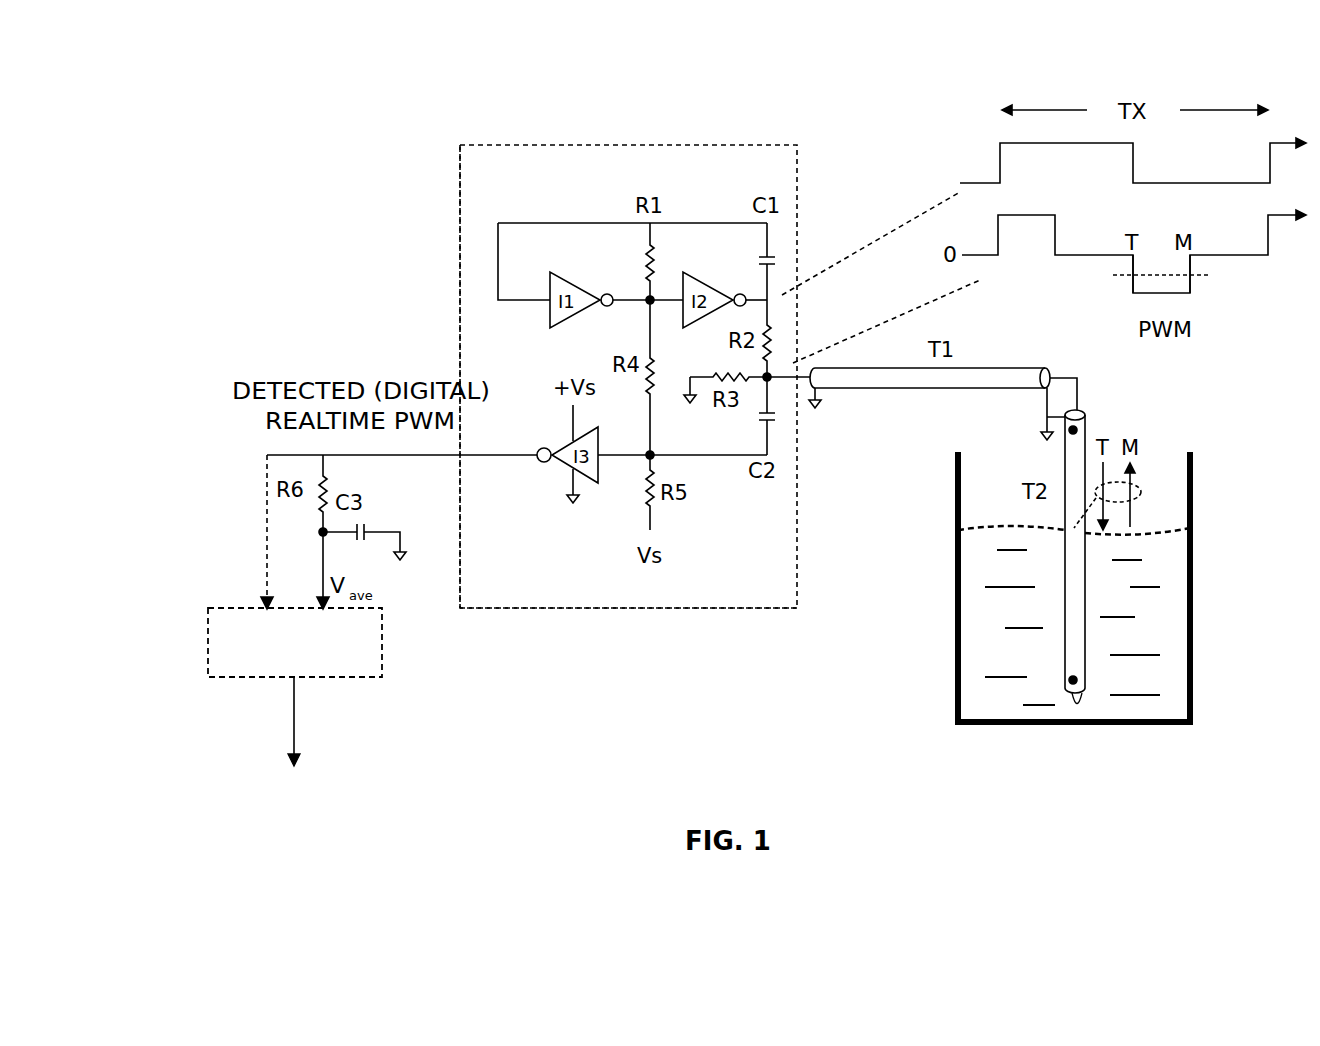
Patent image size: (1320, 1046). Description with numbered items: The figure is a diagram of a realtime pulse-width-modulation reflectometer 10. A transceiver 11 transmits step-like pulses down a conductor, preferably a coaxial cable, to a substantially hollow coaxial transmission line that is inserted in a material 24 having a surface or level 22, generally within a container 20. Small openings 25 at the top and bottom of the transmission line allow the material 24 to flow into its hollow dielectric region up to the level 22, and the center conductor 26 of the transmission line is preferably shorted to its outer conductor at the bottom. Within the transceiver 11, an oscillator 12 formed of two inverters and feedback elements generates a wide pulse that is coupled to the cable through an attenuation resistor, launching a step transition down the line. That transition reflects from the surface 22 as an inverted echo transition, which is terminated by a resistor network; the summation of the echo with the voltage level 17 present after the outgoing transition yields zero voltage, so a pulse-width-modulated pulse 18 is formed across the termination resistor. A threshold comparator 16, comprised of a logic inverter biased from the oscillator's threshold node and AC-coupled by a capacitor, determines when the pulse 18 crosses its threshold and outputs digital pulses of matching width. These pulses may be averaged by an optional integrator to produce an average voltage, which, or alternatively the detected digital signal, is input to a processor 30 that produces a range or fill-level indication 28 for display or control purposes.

The realtime PWM reflectometer 10 is at (343, 163).
The transceiver 11 is at (458, 318).
The oscillator 12 is at (555, 183).
The threshold comparator 16 is at (700, 570).
The voltage level 17 is at (1147, 293).
The PWM pulse 18 is at (1190, 280).
The container 20 is at (1192, 562).
The surface or level 22 is at (998, 545).
The material 24 is at (1072, 627).
The small openings 25 is at (1083, 425).
The center conductor 26 is at (1078, 380).
The range or fill-level indication 28 is at (294, 695).
The processor 30 is at (382, 637).